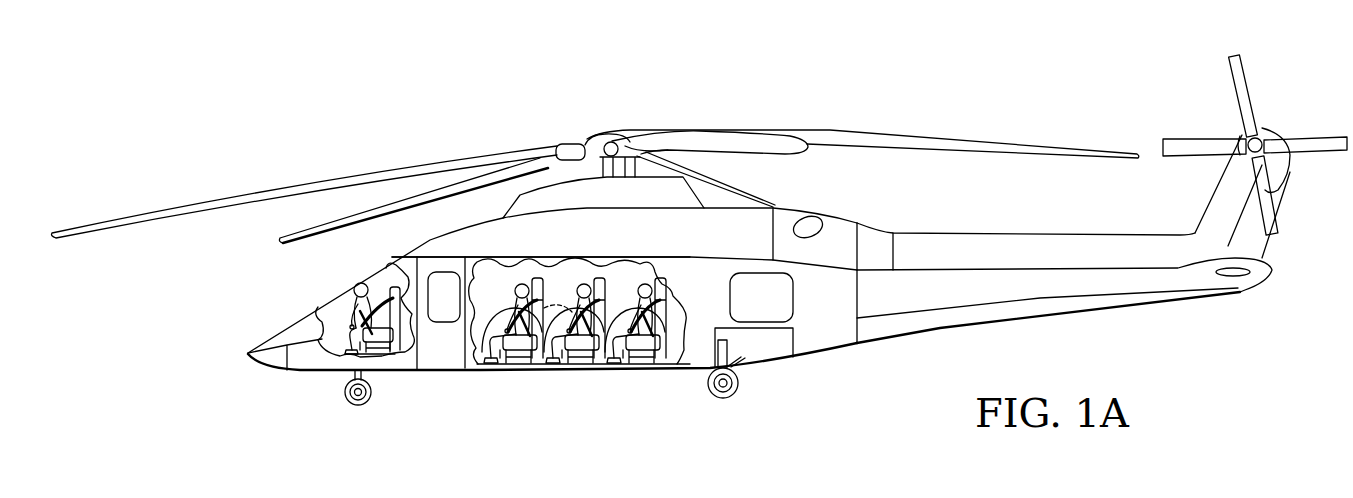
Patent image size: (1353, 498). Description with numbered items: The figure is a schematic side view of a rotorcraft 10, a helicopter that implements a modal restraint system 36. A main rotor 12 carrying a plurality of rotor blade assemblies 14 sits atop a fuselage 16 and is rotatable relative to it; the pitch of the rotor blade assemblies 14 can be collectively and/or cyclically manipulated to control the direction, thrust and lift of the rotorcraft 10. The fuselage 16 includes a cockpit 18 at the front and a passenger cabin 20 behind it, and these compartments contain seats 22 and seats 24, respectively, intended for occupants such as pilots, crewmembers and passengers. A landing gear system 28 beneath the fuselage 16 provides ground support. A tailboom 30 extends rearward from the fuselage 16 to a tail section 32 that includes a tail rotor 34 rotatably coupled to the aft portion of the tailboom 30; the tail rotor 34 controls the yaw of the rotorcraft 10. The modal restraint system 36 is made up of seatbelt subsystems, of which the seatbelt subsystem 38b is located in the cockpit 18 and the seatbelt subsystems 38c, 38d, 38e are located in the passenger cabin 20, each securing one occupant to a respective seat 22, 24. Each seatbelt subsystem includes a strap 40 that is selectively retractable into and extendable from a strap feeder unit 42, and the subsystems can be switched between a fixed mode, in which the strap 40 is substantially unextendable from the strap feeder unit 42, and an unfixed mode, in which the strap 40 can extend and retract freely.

The rotorcraft 10 is at (352, 106).
The main rotor 12 is at (600, 134).
The rotor blade assemblies 14 is at (930, 134).
The fuselage 16 is at (267, 367).
The cockpit 18 is at (340, 356).
The passenger cabin 20 is at (493, 273).
The seats 22 is at (411, 357).
The seats 24 is at (681, 367).
The landing gear system 28 is at (739, 384).
The tailboom 30 is at (1015, 320).
The tail section 32 is at (1228, 124).
The tail rotor 34 is at (1263, 130).
The modal restraint system 36 is at (362, 313).
The seatbelt subsystem 38b is at (373, 297).
The seatbelt subsystem 38c is at (488, 362).
The seatbelt subsystem 38d is at (549, 362).
The seatbelt subsystem 38e is at (609, 362).
The strap 40 is at (512, 283).
The strap feeder unit 42 is at (574, 306).